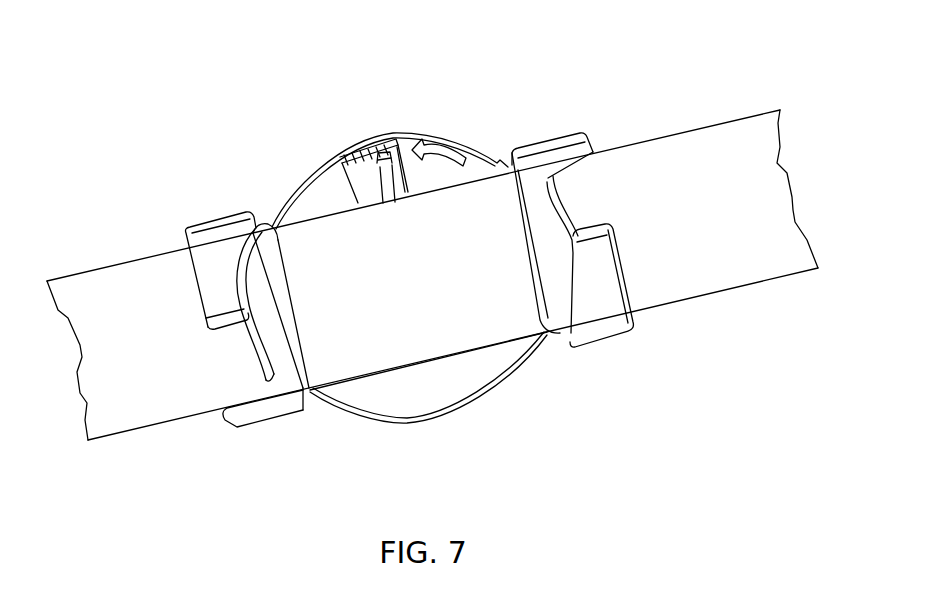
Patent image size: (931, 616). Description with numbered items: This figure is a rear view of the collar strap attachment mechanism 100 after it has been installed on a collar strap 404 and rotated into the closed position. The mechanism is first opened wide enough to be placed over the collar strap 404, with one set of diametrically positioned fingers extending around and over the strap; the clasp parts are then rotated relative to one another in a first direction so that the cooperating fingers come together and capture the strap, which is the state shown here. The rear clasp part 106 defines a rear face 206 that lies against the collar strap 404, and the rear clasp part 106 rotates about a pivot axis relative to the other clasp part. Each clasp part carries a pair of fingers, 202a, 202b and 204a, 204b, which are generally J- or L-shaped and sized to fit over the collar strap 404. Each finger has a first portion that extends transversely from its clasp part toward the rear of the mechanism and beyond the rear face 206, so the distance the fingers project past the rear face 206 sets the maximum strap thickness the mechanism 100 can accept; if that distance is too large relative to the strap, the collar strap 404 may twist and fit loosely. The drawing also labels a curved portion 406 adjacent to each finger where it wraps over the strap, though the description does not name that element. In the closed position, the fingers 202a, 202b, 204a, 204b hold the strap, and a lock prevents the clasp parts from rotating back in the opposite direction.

The collar strap attachment mechanism 100 is at (420, 259).
The rear clasp part 106 is at (313, 198).
The finger 202a is at (215, 230).
The finger 202b is at (600, 293).
The finger 204a is at (283, 372).
The finger 204b is at (561, 145).
The rear face 206 is at (442, 400).
The collar strap 404 is at (733, 142).
The curved hook 406 is at (257, 347).